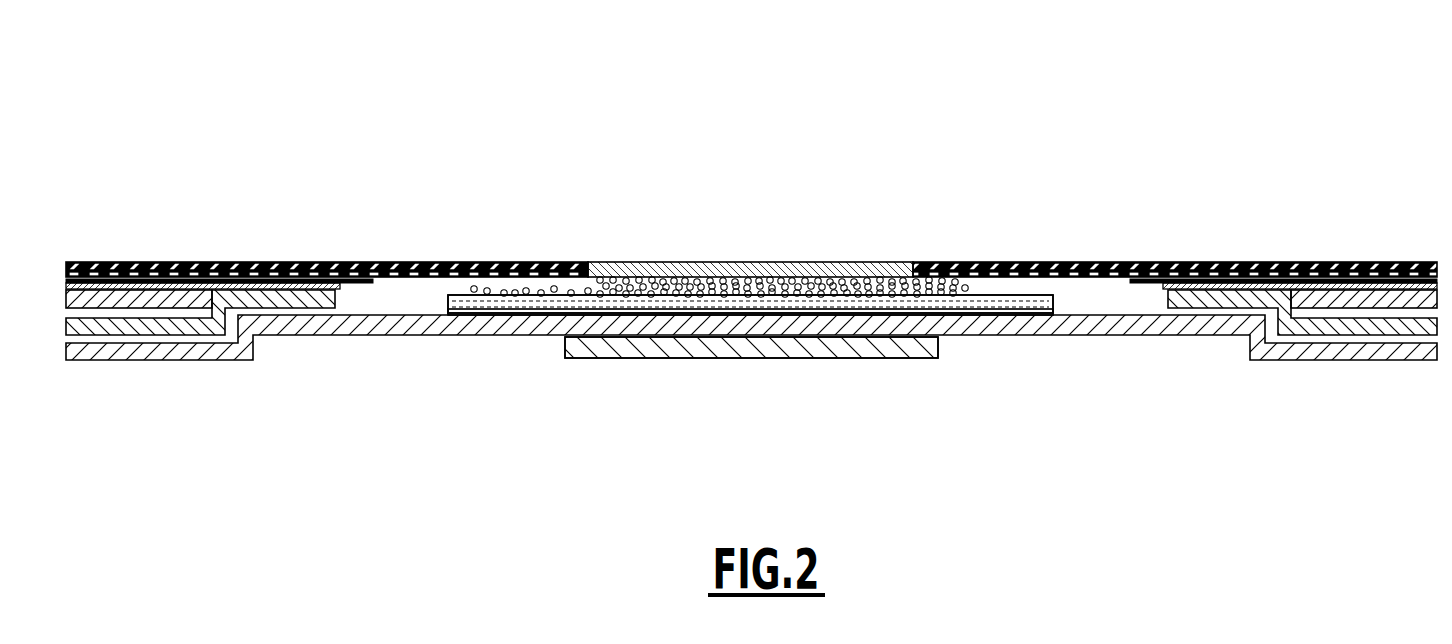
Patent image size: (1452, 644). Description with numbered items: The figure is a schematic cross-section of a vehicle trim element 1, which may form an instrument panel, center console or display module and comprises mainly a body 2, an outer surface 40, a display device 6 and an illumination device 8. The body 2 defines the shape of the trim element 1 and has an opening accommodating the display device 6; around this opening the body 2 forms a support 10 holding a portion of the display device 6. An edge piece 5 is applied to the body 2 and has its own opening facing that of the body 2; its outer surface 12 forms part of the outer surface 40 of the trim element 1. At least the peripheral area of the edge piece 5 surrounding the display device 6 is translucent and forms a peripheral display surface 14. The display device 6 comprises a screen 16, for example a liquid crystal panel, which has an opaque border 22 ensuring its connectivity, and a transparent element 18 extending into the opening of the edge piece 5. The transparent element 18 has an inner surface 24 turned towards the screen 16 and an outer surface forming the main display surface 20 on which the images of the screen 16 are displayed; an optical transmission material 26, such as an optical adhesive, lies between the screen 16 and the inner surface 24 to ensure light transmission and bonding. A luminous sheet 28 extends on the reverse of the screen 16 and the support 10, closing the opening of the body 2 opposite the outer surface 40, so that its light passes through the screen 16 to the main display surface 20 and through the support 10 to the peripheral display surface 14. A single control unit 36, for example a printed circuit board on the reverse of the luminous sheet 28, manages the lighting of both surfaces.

The vehicle trim element 1 is at (1147, 105).
The body 2 is at (141, 297).
The edge piece 5 is at (751, 215).
The display device 6 is at (752, 305).
The illumination device 8 is at (385, 330).
The support 10 is at (181, 325).
The outer surface of the edge piece 12 is at (463, 262).
The peripheral display surface 14 is at (555, 262).
The screen 16 is at (1033, 302).
The transparent element 18 is at (874, 262).
The main display surface 20 is at (727, 262).
The opaque border 22 is at (480, 305).
The inner surface of the transparent element 24 is at (650, 263).
The optical transmission material 26 is at (830, 284).
The luminous sheet 28 is at (930, 322).
The control unit 36 is at (790, 345).
The outer surface 40 is at (218, 262).